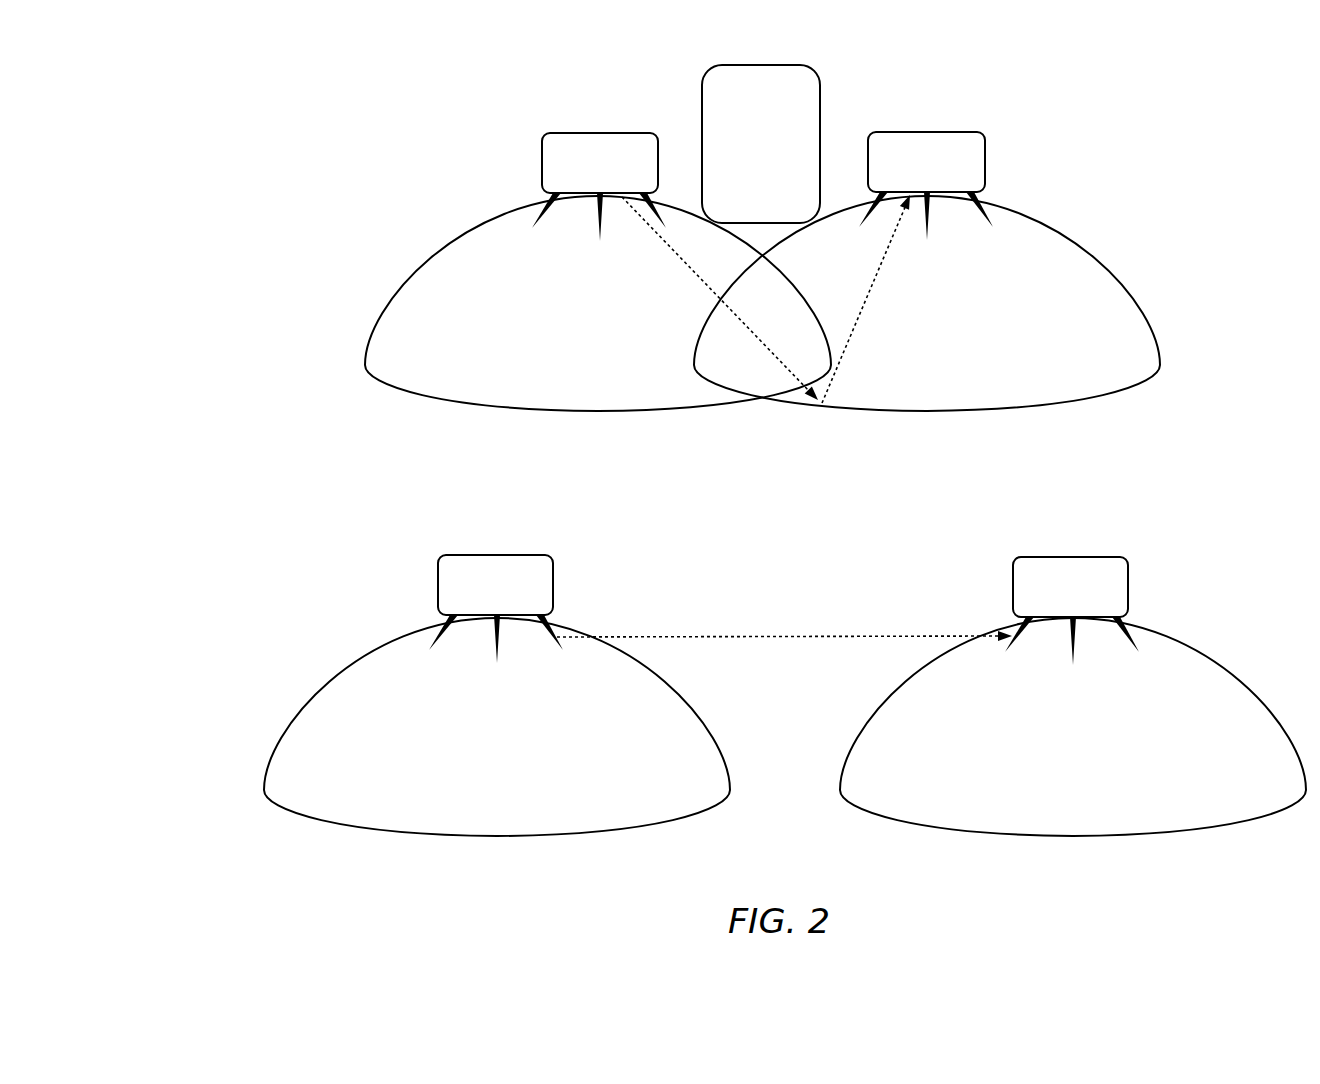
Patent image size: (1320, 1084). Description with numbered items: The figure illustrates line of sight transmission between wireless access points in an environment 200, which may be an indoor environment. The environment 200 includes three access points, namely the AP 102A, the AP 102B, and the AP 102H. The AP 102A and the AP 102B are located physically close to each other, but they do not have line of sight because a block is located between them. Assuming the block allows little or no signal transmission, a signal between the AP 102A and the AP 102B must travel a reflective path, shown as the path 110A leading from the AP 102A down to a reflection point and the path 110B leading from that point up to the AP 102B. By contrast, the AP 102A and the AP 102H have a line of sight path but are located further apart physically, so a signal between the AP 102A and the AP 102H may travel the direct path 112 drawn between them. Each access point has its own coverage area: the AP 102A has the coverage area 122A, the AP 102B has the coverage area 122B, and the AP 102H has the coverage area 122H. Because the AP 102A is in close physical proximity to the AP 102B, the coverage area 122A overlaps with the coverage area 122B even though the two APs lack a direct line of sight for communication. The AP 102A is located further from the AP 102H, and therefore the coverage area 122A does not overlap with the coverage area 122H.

The environment 200 is at (1157, 128).
The access point 102A is at (547, 398).
The access point 102B is at (926, 186).
The access point 102H is at (1072, 611).
The reflective path 110A is at (680, 274).
The reflective path 110B is at (889, 276).
The direct path 112 is at (800, 626).
The coverage area 122A is at (547, 516).
The coverage area 122B is at (927, 303).
The coverage area 122H is at (1073, 727).